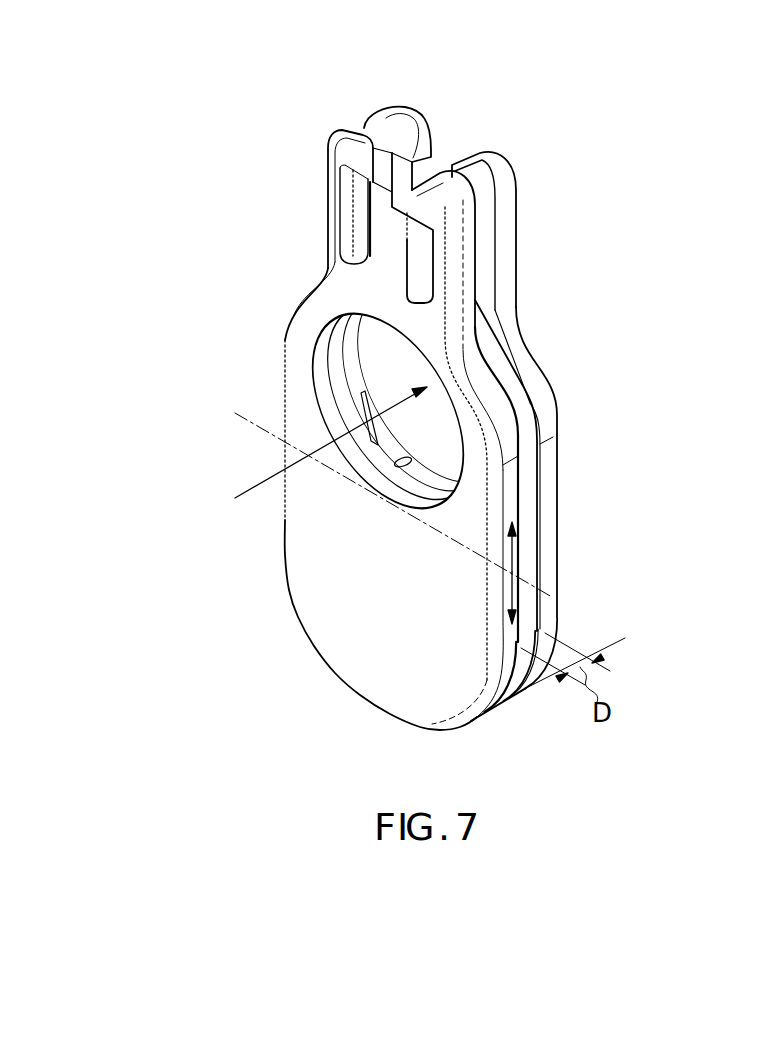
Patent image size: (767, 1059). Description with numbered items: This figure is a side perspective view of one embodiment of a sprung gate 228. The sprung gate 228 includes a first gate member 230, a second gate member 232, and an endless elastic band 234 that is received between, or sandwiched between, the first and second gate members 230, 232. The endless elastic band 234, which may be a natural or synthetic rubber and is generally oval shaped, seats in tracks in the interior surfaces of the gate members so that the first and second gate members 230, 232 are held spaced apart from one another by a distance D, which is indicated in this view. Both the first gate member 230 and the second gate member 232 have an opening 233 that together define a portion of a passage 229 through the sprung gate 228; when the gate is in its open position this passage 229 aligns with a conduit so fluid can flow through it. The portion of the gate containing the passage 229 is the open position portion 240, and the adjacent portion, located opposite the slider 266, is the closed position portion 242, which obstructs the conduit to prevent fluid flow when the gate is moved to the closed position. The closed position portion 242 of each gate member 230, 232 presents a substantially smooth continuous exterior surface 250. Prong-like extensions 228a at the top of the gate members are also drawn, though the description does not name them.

The sprung gate 228 is at (608, 307).
The prongs 228a is at (327, 197).
The passage 229 is at (258, 482).
The first gate member 230 is at (290, 568).
The second gate member 232 is at (562, 453).
The opening 233 is at (368, 344).
The endless elastic band 234 is at (530, 603).
The open position portion 240 is at (514, 552).
The closed position portion 242 is at (510, 592).
The exterior surface 250 is at (405, 567).
The slider 266 is at (357, 133).